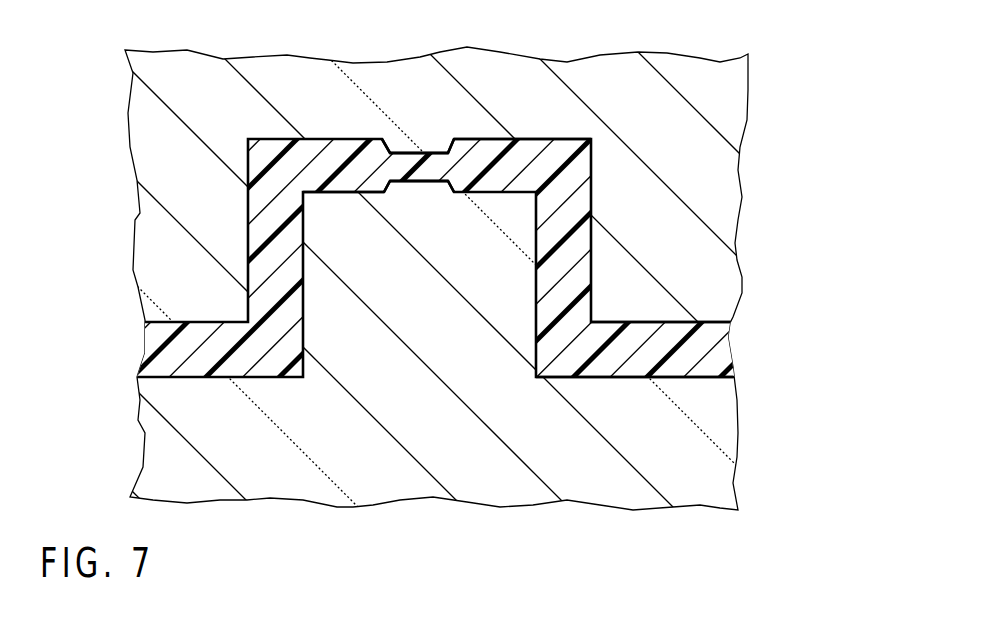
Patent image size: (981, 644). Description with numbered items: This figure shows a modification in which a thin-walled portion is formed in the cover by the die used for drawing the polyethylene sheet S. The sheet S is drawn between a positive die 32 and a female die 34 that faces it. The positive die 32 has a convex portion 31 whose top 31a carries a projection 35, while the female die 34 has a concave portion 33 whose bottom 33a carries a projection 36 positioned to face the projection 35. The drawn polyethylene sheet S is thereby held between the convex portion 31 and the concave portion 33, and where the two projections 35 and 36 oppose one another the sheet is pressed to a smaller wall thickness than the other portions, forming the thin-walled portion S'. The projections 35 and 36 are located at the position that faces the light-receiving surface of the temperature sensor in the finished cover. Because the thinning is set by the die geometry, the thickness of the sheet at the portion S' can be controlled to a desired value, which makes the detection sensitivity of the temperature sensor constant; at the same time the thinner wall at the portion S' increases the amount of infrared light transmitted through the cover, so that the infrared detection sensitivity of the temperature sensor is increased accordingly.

The convex portion 31 is at (315, 272).
The top of the convex portion 31a is at (337, 190).
The positive die 32 is at (718, 423).
The concave portion 33 is at (250, 214).
The bottom of the concave portion 33a is at (532, 140).
The female die 34 is at (728, 198).
The projection 35 is at (432, 186).
The projection 36 is at (400, 147).
The polyethylene sheet S is at (659, 349).
The thin-walled portion S' is at (429, 365).